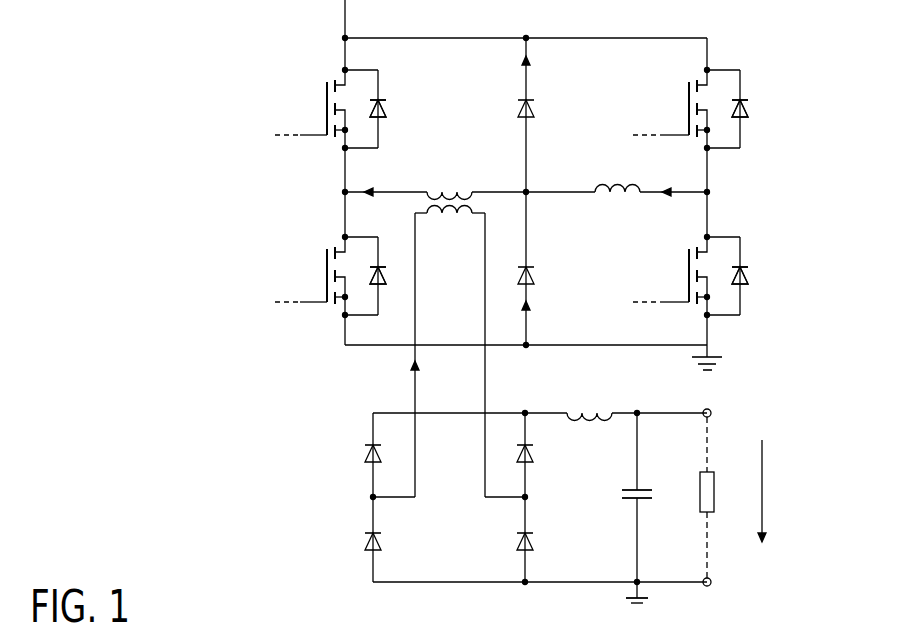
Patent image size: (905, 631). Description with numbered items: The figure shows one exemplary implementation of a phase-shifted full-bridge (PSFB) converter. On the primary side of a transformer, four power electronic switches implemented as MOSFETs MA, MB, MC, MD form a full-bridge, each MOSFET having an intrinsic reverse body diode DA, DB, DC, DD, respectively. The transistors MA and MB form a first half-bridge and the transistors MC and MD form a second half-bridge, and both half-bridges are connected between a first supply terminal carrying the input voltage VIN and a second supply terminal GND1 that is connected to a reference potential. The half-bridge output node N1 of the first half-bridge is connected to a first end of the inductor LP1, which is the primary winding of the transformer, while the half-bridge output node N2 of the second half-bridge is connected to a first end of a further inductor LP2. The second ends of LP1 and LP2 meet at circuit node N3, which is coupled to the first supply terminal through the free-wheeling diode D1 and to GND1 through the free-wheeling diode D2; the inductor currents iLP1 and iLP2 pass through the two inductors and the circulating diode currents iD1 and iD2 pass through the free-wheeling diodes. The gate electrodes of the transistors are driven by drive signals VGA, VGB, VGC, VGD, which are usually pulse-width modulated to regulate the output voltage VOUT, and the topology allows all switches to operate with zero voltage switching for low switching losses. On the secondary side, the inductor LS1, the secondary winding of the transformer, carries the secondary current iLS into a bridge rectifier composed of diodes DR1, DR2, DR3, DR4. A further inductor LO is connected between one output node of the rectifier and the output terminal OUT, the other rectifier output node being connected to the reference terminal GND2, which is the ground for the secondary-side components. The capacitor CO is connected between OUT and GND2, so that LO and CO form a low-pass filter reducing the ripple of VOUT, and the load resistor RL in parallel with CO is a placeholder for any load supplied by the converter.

The input voltage VIN is at (327, 10).
The transistor MA is at (338, 109).
The transistor MB is at (338, 276).
The transistor MC is at (699, 109).
The transistor MD is at (699, 276).
The body diode DA is at (386, 99).
The body diode DB is at (386, 265).
The body diode DC is at (749, 99).
The body diode DD is at (749, 265).
The drive signal VGA is at (282, 132).
The drive signal VGB is at (282, 299).
The drive signal VGC is at (642, 132).
The drive signal VGD is at (642, 299).
The free-wheeling diode D1 is at (539, 115).
The free-wheeling diode D2 is at (539, 268).
The diode current iD1 is at (512, 68).
The diode current iD2 is at (539, 312).
The half-bridge output node N1 is at (370, 193).
The half-bridge output node N2 is at (719, 193).
The circuit node N3 is at (546, 182).
The inductor LP1 is at (466, 184).
The further inductor LP2 is at (639, 178).
The inductor current iLP1 is at (372, 182).
The inductor current iLP2 is at (666, 182).
The inductor LS1 is at (450, 352).
The secondary current iLS is at (401, 376).
The second supply terminal GND1 is at (728, 372).
The reference terminal GND2 is at (658, 602).
The diode DR1 is at (355, 464).
The diode DR2 is at (355, 536).
The diode DR3 is at (541, 464).
The diode DR4 is at (541, 536).
The further inductor LO is at (637, 433).
The capacitor CO is at (646, 497).
The load resistor RL is at (719, 497).
The output terminal OUT is at (728, 495).
The output voltage VOUT is at (781, 491).